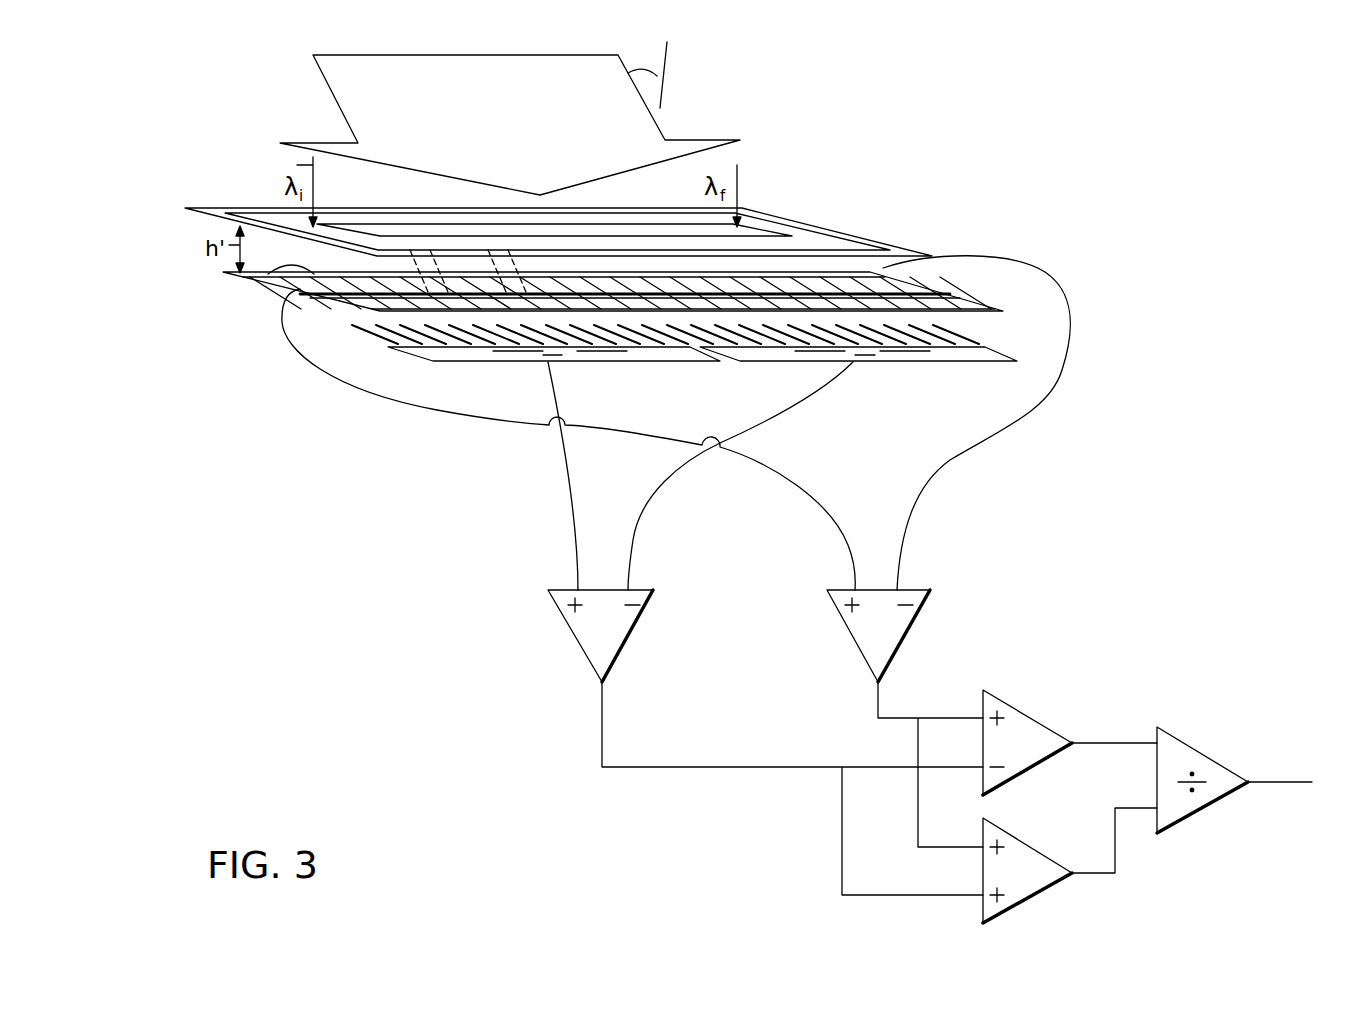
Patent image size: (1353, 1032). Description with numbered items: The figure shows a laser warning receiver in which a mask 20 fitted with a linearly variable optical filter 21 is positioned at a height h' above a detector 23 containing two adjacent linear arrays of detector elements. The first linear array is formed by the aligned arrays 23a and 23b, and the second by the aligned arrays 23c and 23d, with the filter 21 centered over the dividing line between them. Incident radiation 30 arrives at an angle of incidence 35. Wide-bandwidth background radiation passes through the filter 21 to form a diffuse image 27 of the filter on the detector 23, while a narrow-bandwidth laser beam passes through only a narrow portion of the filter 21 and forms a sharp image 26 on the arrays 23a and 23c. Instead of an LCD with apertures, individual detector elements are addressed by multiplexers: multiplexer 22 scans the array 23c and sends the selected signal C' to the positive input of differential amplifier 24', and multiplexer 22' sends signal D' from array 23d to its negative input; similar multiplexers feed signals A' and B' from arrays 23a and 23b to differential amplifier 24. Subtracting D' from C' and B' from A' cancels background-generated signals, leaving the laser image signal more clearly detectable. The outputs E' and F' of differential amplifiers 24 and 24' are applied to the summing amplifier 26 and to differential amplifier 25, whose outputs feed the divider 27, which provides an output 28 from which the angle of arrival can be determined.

The incident light beam 30 is at (325, 83).
The angle of incidence reference 35 is at (668, 55).
The mask 20 is at (282, 220).
The linearly variable optical filter 21 is at (733, 225).
The divider 27 is at (1203, 755).
The detector 23 is at (968, 312).
The linear array of detector elements 23a is at (287, 279).
The linear array of detector elements 23b is at (878, 281).
The linear array of detector elements 23c is at (297, 292).
The linear array of detector elements 23d is at (905, 309).
The sharp image / amplifier 26 is at (378, 309).
The multiplexer 22 is at (554, 468).
The multiplexer 22' is at (822, 468).
The differential amplifier 24 is at (876, 703).
The differential amplifier 24' is at (742, 727).
The differential amplifier 25 is at (1043, 725).
The output 28 is at (1287, 778).